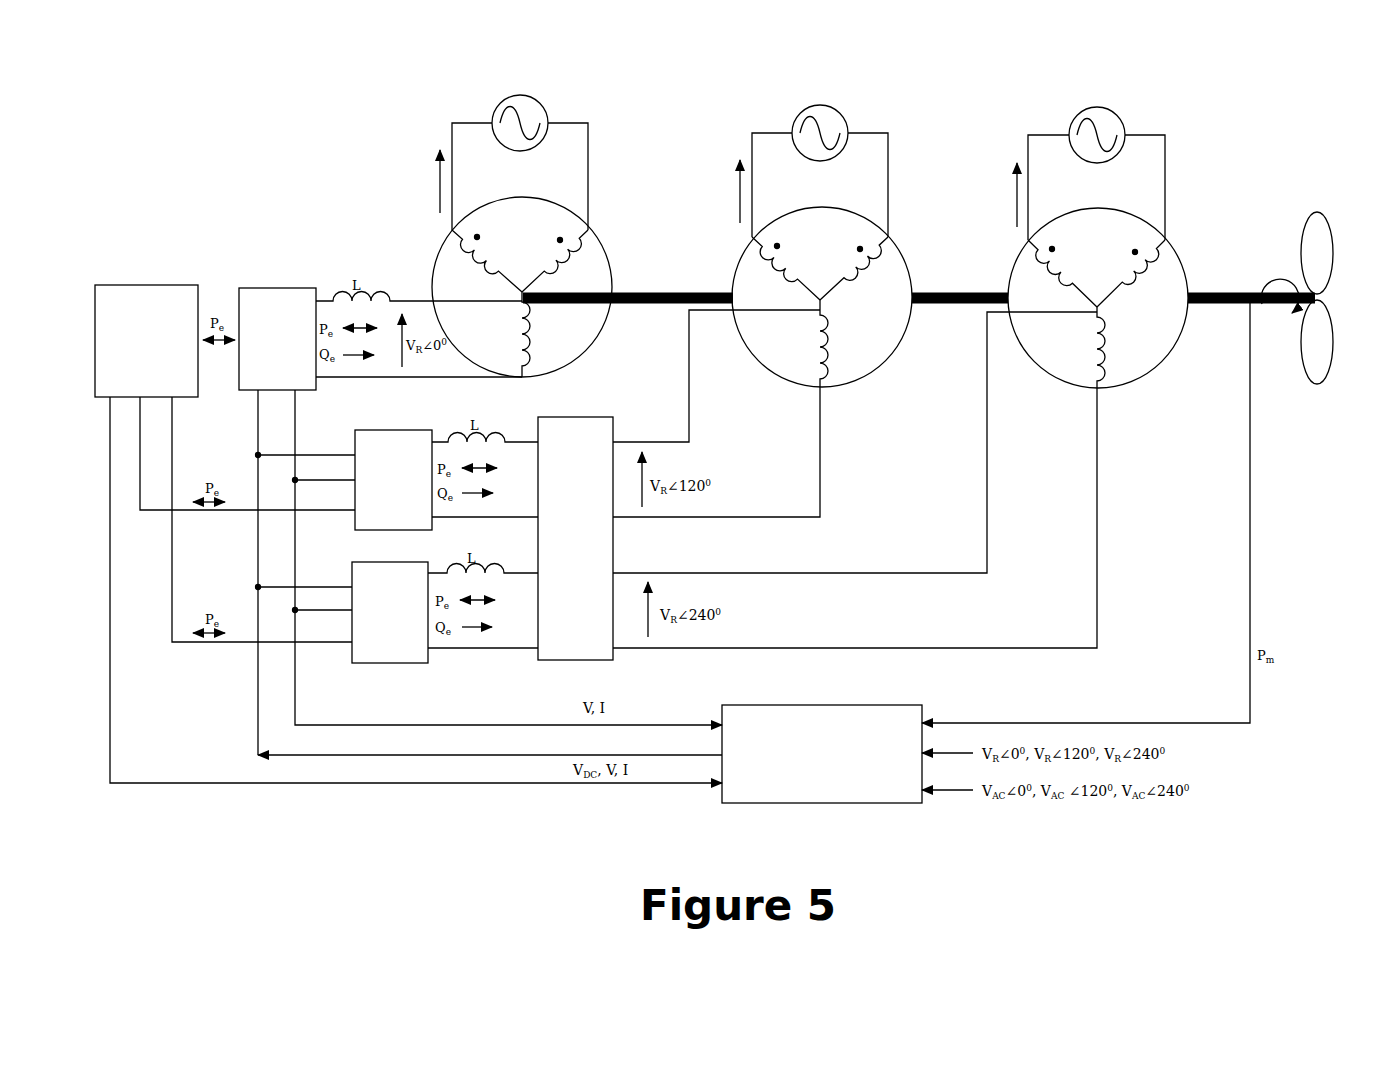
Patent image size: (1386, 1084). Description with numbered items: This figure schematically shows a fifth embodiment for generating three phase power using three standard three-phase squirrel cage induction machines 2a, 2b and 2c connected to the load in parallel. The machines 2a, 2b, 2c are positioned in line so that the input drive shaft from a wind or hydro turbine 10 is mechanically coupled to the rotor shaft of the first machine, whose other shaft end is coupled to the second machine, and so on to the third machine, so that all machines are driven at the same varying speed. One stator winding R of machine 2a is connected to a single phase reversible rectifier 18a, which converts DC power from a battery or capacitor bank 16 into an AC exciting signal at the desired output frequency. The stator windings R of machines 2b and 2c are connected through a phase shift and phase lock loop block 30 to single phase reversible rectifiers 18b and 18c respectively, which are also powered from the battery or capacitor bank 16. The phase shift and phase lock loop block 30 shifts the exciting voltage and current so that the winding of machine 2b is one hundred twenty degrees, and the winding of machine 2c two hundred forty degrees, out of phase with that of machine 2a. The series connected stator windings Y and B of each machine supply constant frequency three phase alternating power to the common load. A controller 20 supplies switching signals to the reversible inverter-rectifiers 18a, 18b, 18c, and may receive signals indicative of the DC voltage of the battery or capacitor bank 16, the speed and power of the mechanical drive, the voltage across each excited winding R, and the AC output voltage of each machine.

The induction machine 2a is at (604, 220).
The induction machine 2b is at (904, 223).
The induction machine 2c is at (1193, 227).
The turbine 10 is at (1333, 238).
The battery or capacitor bank 16 is at (146, 341).
The single phase reversible rectifier 18a is at (277, 339).
The single phase reversible rectifier 18b is at (393, 480).
The single phase reversible rectifier 18c is at (390, 612).
The controller 20 is at (822, 754).
The phase shift and phase lock loop block 30 is at (575, 538).